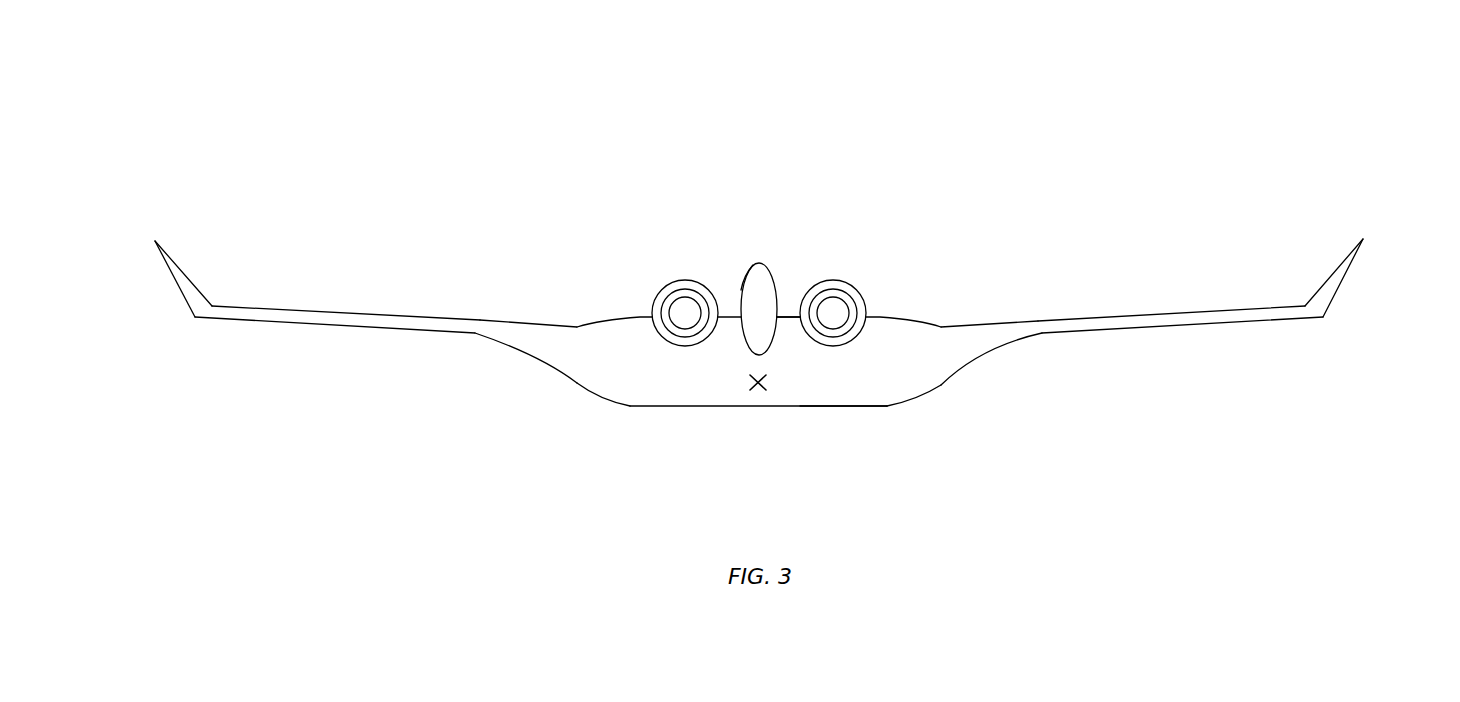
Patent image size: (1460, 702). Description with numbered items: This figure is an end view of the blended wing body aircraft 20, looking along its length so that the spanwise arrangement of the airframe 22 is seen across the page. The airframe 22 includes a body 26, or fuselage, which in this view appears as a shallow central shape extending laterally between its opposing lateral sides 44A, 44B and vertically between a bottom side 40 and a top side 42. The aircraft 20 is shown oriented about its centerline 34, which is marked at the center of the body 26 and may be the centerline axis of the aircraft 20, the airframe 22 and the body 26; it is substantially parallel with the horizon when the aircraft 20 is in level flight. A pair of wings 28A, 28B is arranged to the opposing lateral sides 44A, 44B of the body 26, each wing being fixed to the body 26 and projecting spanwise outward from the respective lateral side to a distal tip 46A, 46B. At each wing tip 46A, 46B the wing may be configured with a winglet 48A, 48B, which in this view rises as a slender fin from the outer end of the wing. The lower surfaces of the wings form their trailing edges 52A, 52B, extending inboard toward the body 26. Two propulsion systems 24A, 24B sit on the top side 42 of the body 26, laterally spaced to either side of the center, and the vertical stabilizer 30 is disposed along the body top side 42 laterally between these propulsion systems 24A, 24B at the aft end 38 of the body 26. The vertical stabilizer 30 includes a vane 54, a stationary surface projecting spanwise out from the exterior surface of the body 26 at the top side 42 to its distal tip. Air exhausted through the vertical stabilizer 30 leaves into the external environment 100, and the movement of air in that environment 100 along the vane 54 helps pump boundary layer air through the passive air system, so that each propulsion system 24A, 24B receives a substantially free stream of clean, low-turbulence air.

The environment 100 is at (523, 172).
The blended wing body aircraft 20 is at (1104, 108).
The airframe 22 is at (955, 308).
The propulsion system 24A is at (865, 282).
The propulsion system 24B is at (667, 278).
The body 26 is at (598, 308).
The wing 28A is at (1182, 298).
The wing 28B is at (375, 297).
The vertical stabilizer 30 is at (767, 257).
The centerline 34 is at (758, 390).
The aft end 38 is at (832, 383).
The bottom side 40 is at (788, 406).
The top side 42 is at (787, 310).
The lateral side 44A is at (937, 383).
The lateral side 44B is at (580, 386).
The distal tip 46A is at (1323, 317).
The distal tip 46B is at (195, 317).
The winglet 48A is at (1345, 290).
The winglet 48B is at (173, 292).
The trailing edge 52A is at (1147, 320).
The trailing edge 52B is at (330, 315).
The vane 54 is at (747, 277).